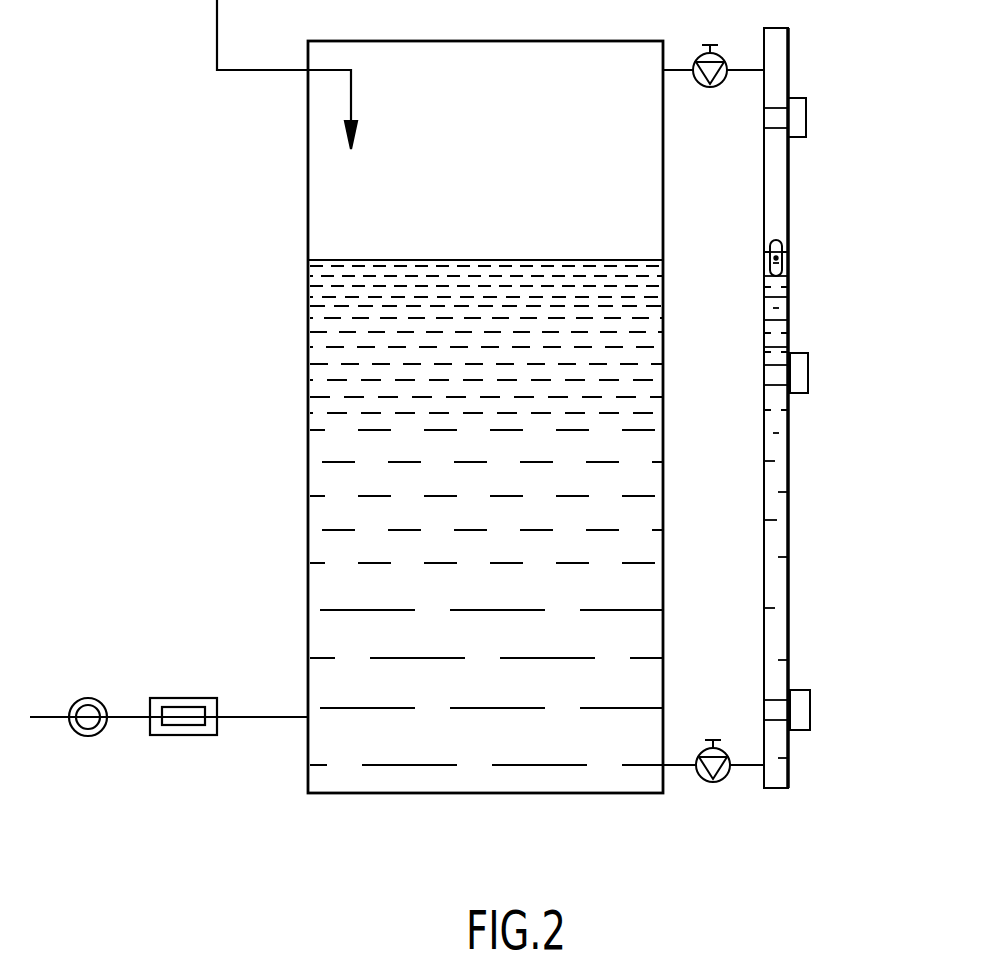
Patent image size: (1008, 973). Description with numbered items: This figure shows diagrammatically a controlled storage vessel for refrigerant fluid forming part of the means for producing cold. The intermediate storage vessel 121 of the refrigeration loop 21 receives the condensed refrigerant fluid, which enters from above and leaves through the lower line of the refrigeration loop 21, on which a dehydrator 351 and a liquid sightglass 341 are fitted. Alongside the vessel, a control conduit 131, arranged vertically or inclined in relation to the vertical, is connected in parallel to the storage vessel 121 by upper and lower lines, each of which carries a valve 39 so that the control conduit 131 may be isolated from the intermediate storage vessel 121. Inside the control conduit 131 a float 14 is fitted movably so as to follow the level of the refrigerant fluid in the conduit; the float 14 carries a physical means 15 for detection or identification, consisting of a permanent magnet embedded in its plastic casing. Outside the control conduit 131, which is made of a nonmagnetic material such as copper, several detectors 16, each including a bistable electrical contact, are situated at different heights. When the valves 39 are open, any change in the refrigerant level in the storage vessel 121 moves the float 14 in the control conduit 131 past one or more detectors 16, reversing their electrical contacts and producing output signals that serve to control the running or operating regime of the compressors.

The refrigeration loop 21 is at (272, 72).
The intermediate storage vessel 121 is at (305, 195).
The valves 39 is at (715, 88).
The control conduit 131 is at (789, 207).
The detectors 16 is at (806, 137).
The physical means for detection 15 is at (770, 252).
The float 14 is at (790, 253).
The liquid sightglass 341 is at (84, 737).
The dehydrator 351 is at (185, 708).